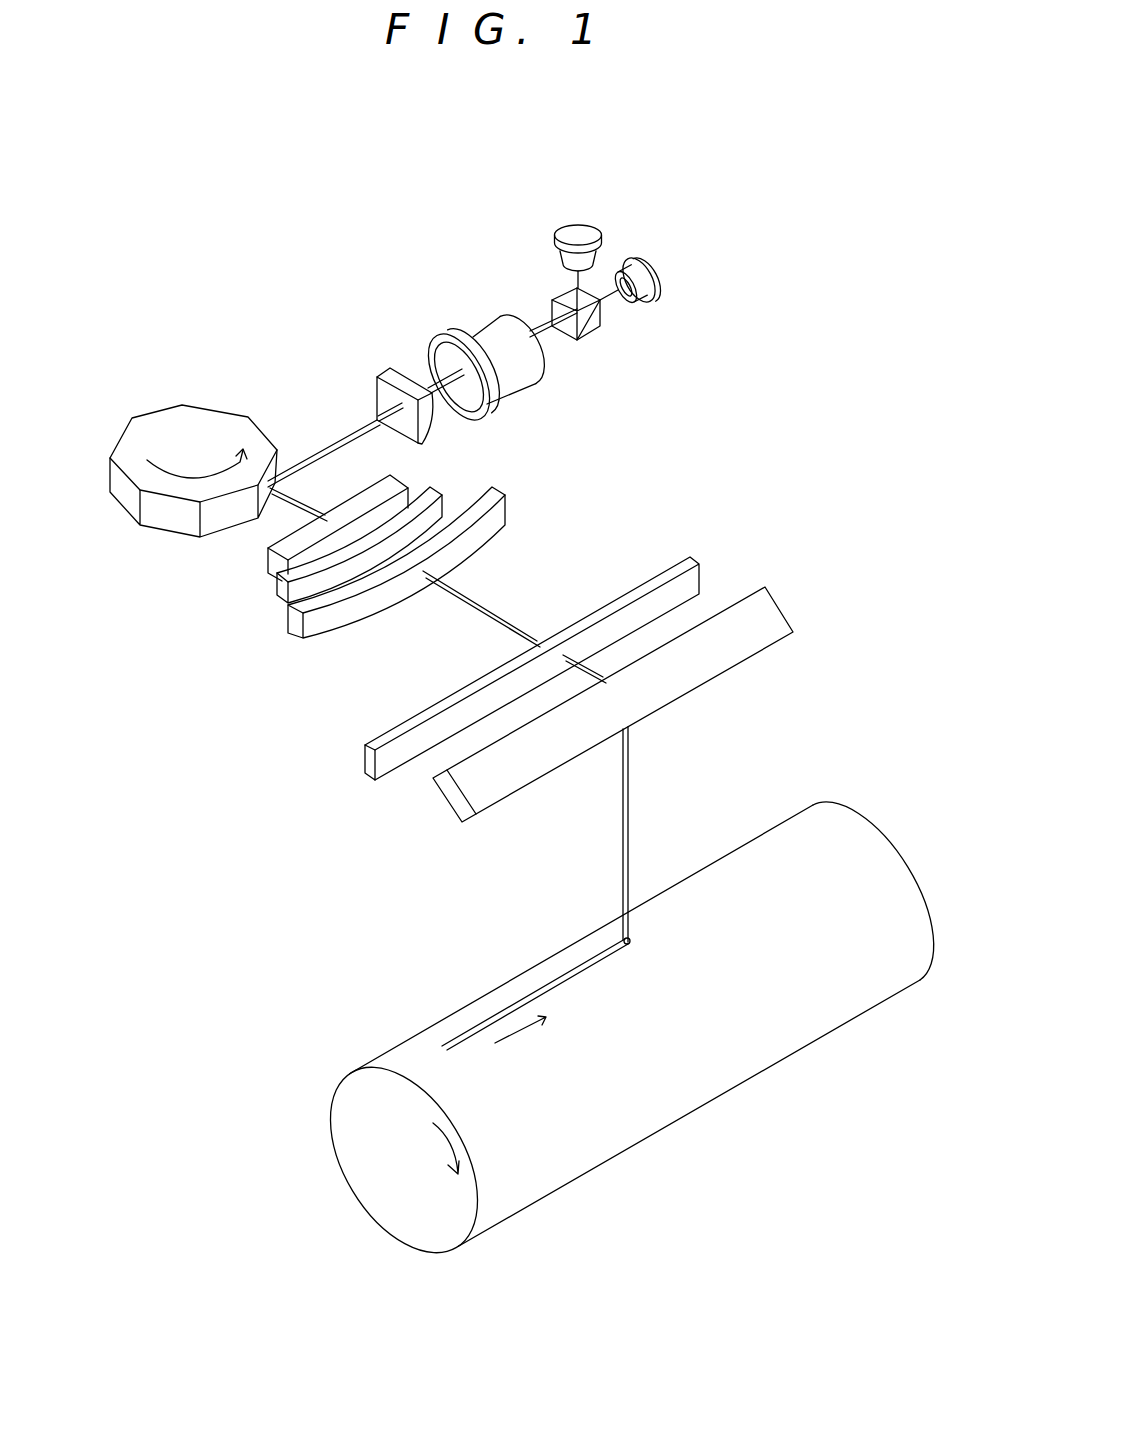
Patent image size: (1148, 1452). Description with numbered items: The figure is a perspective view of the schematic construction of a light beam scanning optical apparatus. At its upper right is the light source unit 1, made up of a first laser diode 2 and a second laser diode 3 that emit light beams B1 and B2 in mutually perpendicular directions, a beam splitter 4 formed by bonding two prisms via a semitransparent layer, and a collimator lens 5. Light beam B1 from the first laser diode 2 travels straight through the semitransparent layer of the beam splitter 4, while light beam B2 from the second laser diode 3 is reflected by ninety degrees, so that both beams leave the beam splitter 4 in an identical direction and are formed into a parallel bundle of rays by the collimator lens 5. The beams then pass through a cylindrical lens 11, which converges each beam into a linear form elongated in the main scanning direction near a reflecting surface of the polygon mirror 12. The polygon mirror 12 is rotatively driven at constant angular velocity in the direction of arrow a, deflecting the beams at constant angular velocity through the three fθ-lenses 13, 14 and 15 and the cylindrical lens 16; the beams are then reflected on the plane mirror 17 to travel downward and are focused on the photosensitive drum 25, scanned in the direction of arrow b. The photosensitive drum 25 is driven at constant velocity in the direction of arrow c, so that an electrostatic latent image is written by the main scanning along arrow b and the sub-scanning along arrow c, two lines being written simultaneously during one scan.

The light source unit 1 is at (402, 314).
The first laser diode 2 is at (633, 270).
The second laser diode 3 is at (583, 237).
The beam splitter 4 is at (593, 330).
The collimator lens 5 is at (512, 376).
The cylindrical lens 11 is at (377, 378).
The polygon mirror 12 is at (193, 426).
The fθ-lens 13 is at (266, 562).
The fθ-lens 14 is at (277, 596).
The fθ-lens 15 is at (295, 620).
The cylindrical lens 16 is at (364, 752).
The plane mirror 17 is at (515, 777).
The photosensitive drum 25 is at (617, 1040).
The light beam B1 is at (340, 447).
The light beam B2 is at (660, 842).
The arrow a is at (197, 456).
The arrow b is at (530, 1029).
The arrow c is at (446, 1163).